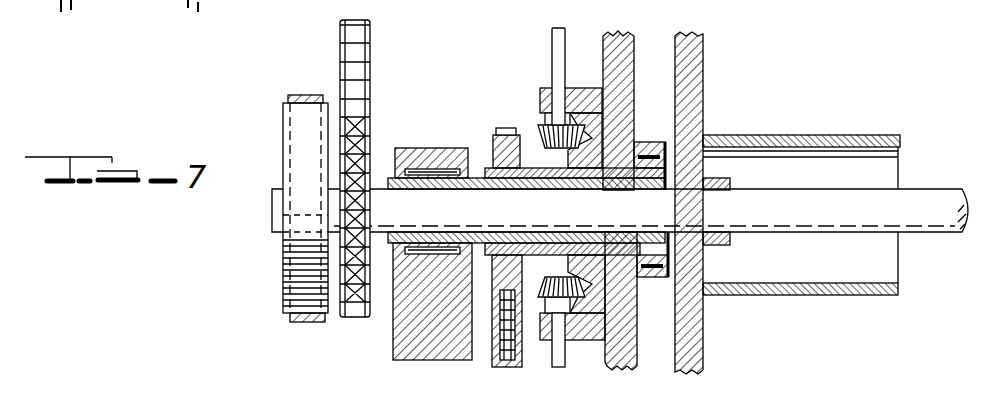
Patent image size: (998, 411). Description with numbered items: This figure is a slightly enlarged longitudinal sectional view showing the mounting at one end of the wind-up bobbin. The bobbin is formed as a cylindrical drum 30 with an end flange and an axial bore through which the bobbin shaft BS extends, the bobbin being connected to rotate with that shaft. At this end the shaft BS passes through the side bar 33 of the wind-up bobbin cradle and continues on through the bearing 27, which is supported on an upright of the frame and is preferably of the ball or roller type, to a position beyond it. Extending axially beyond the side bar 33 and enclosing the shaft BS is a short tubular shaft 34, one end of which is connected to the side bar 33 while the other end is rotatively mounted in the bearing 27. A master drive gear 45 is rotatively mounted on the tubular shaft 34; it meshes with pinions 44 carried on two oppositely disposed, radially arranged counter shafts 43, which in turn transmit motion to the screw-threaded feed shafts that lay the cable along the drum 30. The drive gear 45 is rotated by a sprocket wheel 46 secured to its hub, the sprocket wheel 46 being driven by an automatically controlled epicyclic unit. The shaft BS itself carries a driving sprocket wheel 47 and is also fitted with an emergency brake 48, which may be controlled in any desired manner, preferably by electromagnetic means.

The bearing 27 is at (430, 141).
The cylindrical drum 30 is at (790, 156).
The side bar 33 is at (632, 52).
The tubular shaft 34 is at (655, 150).
The counter shaft 43 is at (556, 55).
The pinion 44 is at (538, 140).
The master drive gear 45 is at (641, 118).
The sprocket wheel 46 is at (506, 128).
The driving sprocket wheel 47 is at (372, 143).
The emergency brake 48 is at (303, 262).
The bobbin shaft BS is at (826, 222).